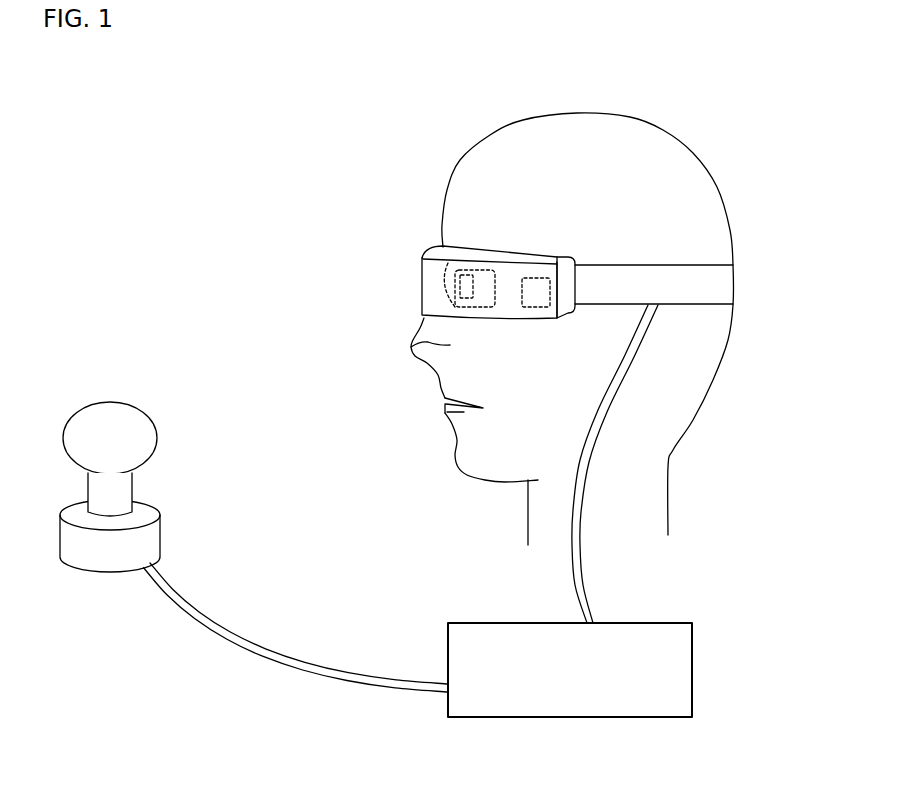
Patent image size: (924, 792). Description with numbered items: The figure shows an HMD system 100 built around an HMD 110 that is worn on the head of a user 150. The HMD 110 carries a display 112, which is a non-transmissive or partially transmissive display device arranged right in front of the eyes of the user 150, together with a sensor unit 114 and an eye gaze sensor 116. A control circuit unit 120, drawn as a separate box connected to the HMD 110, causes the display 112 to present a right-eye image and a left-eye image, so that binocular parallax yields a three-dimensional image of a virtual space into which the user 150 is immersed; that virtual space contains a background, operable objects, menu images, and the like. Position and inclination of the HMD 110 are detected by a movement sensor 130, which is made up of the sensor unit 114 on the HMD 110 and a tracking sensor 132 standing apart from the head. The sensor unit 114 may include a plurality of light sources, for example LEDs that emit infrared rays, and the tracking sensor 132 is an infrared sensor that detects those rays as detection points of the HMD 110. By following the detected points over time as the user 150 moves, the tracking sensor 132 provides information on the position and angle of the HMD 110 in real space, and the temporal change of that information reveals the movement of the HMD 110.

The HMD system 100 is at (347, 183).
The HMD 110 is at (420, 249).
The display 112 is at (443, 282).
The sensor unit 114 is at (525, 308).
The eye gaze sensor 116 is at (471, 280).
The control circuit unit 120 is at (692, 664).
The movement sensor 130 is at (217, 378).
The tracking sensor 132 is at (150, 418).
The user 150 is at (718, 187).